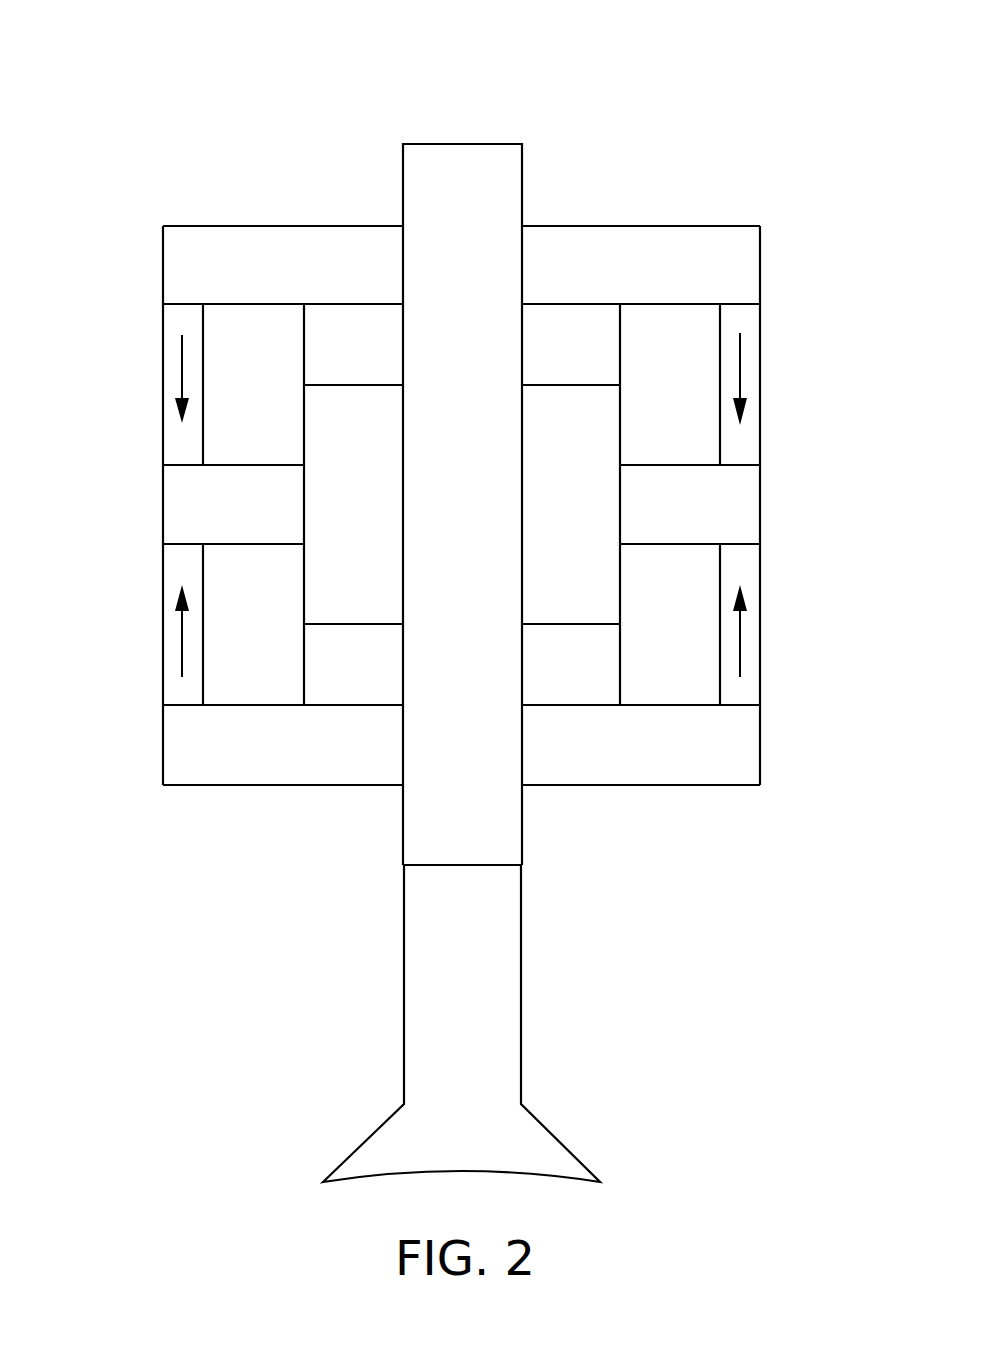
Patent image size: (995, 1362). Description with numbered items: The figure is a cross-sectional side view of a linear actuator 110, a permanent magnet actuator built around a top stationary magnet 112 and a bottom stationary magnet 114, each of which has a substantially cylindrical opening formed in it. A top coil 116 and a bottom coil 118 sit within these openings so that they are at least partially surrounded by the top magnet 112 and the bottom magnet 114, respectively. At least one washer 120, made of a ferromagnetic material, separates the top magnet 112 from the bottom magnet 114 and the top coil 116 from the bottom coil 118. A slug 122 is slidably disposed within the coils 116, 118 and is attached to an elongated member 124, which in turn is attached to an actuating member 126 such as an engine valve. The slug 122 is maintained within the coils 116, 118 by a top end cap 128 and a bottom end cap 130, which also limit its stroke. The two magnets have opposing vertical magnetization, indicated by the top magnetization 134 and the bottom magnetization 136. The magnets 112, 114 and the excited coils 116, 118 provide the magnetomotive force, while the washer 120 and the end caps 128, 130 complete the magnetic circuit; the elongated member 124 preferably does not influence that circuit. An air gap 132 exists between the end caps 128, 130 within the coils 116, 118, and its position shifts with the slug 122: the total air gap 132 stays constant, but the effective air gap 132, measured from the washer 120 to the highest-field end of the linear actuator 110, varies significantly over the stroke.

The linear actuator 110 is at (692, 96).
The top stationary magnet 112 is at (803, 423).
The bottom stationary magnet 114 is at (822, 565).
The top coil 116 is at (698, 165).
The bottom coil 118 is at (720, 823).
The washer 120 is at (803, 503).
The slug 122 is at (363, 383).
The elongated member 124 is at (482, 143).
The actuating member 126 is at (521, 1022).
The top end cap 128 is at (560, 223).
The bottom end cap 130 is at (580, 787).
The air gap 132 is at (362, 705).
The top magnetization 134 is at (803, 333).
The bottom magnetization 136 is at (803, 623).